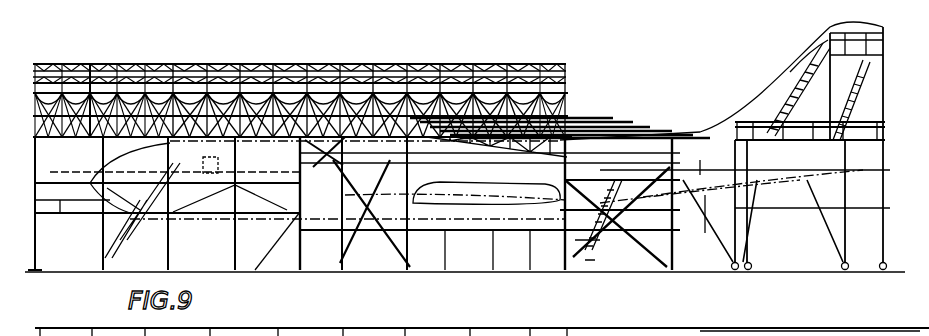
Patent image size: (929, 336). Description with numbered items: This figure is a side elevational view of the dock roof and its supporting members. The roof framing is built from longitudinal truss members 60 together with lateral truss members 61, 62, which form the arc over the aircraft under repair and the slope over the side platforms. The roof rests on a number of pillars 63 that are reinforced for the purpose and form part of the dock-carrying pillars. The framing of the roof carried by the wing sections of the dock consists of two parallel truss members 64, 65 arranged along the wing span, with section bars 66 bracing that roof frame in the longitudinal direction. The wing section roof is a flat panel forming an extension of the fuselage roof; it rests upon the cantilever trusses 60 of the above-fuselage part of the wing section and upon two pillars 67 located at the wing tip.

The longitudinal truss members 60 is at (105, 90).
The lateral truss member 61 is at (163, 98).
The lateral truss member 62 is at (291, 77).
The pillars 63 is at (343, 257).
The parallel truss member 64 is at (500, 155).
The parallel truss member 65 is at (665, 135).
The section bars 66 is at (607, 112).
The pillars 67 is at (583, 253).